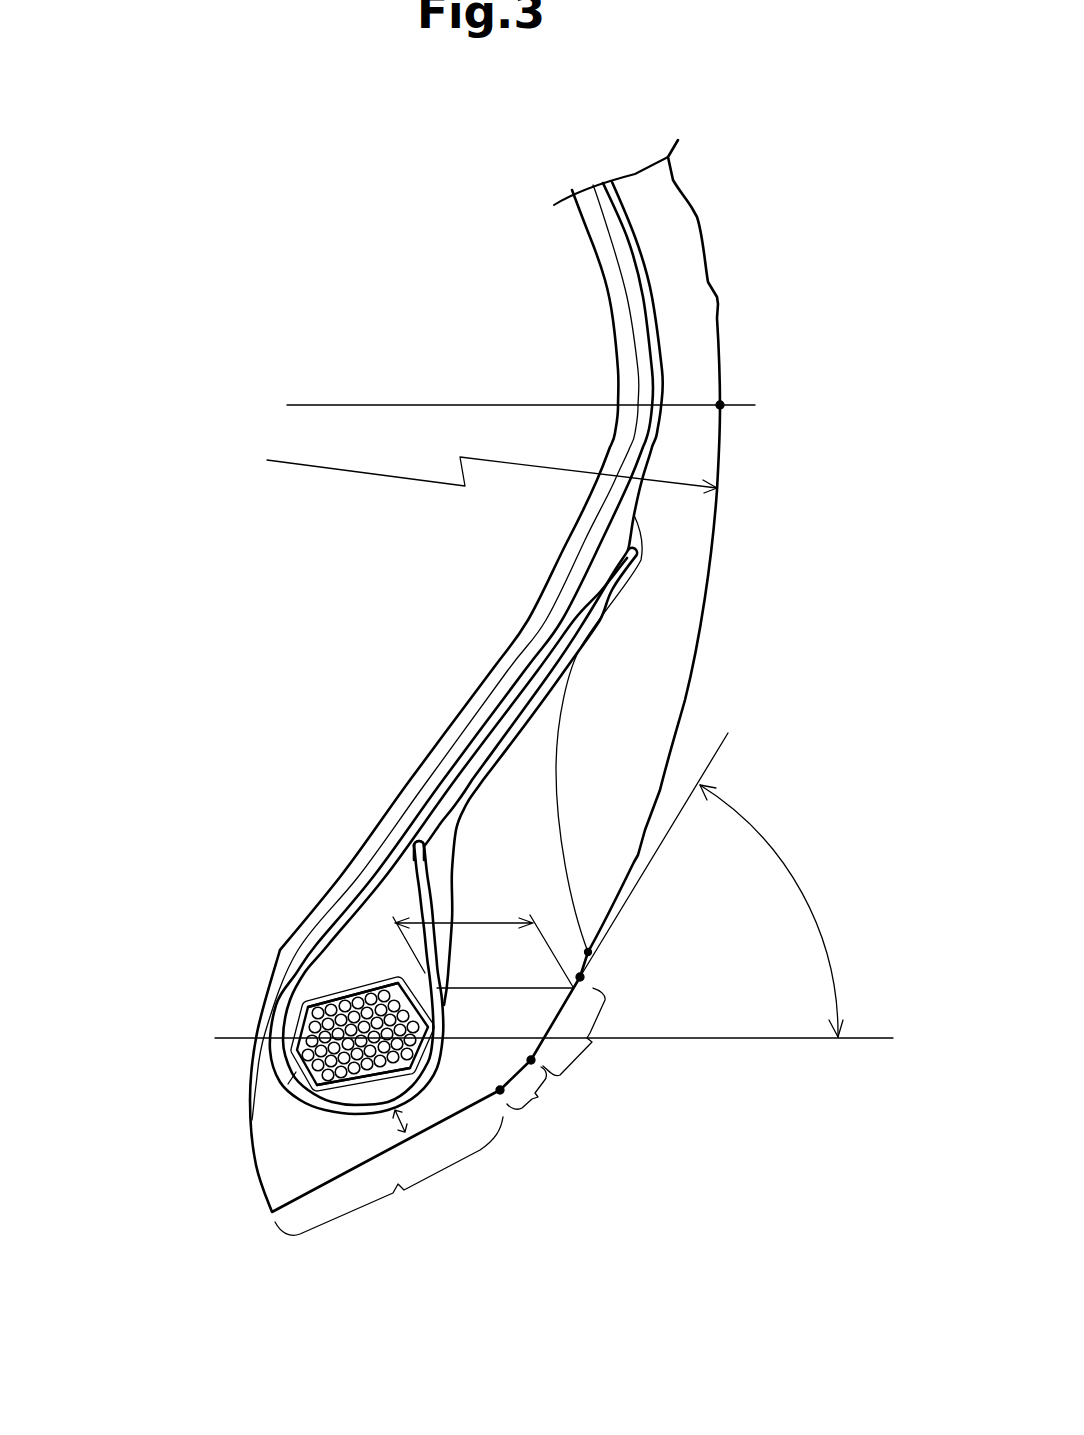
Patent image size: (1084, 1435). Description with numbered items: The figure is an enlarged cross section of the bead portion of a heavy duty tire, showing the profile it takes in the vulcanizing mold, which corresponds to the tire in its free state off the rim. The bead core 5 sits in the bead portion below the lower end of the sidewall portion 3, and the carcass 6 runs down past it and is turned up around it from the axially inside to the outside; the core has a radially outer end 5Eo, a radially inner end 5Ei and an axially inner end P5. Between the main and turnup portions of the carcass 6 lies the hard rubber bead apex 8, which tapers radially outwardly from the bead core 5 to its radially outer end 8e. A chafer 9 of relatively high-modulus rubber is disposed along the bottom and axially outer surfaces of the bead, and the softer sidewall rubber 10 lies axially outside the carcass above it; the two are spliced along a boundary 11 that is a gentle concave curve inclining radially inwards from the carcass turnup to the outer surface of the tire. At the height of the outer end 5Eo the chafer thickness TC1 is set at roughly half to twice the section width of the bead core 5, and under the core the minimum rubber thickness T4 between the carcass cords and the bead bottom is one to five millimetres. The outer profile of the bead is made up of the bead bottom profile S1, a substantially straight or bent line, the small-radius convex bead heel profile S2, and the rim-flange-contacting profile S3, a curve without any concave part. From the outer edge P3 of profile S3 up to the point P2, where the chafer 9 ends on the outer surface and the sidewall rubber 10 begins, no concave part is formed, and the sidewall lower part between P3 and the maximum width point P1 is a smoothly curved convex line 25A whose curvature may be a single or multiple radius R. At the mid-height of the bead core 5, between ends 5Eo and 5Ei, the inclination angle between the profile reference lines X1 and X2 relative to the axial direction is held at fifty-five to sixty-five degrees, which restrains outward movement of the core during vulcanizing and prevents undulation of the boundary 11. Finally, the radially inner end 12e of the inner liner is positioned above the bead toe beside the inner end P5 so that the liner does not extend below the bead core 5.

The sidewall portion 3 is at (747, 273).
The bead core 5 is at (372, 983).
The outer end of the bead core 5Eo is at (375, 980).
The inner end of the bead core 5Ei is at (330, 1103).
The carcass 6 is at (647, 263).
The bead apex 8 is at (340, 897).
The radially outer end of the bead apex 8e is at (417, 838).
The chafer 9 is at (515, 787).
The sidewall rubber 10 is at (687, 542).
The boundary 11 is at (570, 690).
The radially inner end of the inner liner 12e is at (245, 1078).
The sidewall outer surface 25A is at (721, 443).
The maximum tire width point P1 is at (721, 403).
The radially inner end of the sidewall rubber P2 is at (590, 951).
The radially outer edge of the profile S3 P3 is at (582, 977).
The axially inner end of the bead core P5 is at (292, 1078).
The radius R is at (367, 472).
The profile for the bead bottom S1 is at (389, 1176).
The profile for the bead heel S2 is at (544, 1092).
The profile for the rim-flange-contacting part S3 is at (587, 1032).
The minimum rubber thickness T4 is at (403, 1122).
The rubber thickness TC1 is at (465, 915).
The line X1 is at (878, 1040).
The line X2 is at (713, 757).